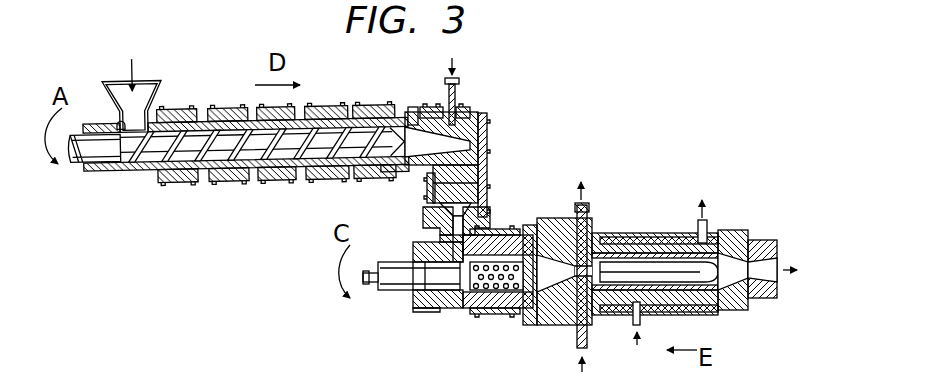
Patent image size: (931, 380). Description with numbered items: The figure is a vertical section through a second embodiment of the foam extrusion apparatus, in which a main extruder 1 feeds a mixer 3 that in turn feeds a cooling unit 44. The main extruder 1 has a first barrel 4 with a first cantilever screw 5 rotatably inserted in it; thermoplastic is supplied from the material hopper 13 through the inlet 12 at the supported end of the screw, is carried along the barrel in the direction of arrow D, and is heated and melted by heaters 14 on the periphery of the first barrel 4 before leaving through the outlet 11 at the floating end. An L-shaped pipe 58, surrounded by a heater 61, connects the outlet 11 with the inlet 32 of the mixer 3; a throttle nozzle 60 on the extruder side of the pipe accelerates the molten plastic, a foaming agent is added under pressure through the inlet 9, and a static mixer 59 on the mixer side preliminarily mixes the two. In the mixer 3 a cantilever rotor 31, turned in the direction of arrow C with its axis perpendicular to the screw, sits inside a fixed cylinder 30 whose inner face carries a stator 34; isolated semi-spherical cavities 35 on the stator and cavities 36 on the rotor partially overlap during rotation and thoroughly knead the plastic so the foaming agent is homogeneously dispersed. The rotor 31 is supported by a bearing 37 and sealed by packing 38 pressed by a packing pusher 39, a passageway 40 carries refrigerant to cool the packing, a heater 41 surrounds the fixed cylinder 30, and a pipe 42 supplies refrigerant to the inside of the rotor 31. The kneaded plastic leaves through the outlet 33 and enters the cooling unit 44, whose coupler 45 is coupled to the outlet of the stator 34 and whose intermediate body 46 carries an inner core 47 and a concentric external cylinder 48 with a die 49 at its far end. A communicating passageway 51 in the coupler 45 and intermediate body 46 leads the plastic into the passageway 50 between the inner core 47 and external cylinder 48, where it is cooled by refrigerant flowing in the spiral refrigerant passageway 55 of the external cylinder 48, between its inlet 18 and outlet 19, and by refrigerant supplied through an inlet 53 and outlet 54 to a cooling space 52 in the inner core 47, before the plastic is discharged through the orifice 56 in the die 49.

The main extruder 1 is at (197, 203).
The mixer 3 is at (461, 335).
The first barrel 4 is at (153, 180).
The first cantilever screw 5 is at (228, 160).
The inlet for foaming agent 9 is at (456, 92).
The outlet 11 is at (410, 108).
The inlet for materials 12 is at (117, 126).
The material hopper 13 is at (150, 98).
The heaters 14 is at (222, 108).
The inlet of the refrigerant passageway 18 is at (645, 328).
The outlet of the refrigerant passageway 19 is at (708, 223).
The fixed cylinder 30 is at (478, 313).
The cantilever rotor 31 is at (420, 301).
The inlet 32 is at (425, 237).
The outlet 33 is at (540, 326).
The stator 34 is at (506, 310).
The semi-spherical cavities of the stator 35 is at (500, 230).
The semi-spherical cavities of the rotor 36 is at (474, 278).
The bearing 37 is at (470, 293).
The packing 38 is at (428, 302).
The packing pusher 39 is at (422, 291).
The passageway of a refrigerant 40 is at (445, 313).
The heater 41 is at (528, 326).
The pipe 42 is at (368, 288).
The cooling unit 44 is at (640, 232).
The coupler 45 is at (553, 222).
The intermediate body 46 is at (566, 321).
The inner core 47 is at (642, 315).
The external cylinder 48 is at (661, 259).
The die 49 is at (763, 299).
The passageway for the thermo plastic material 50 is at (723, 311).
The communicating passageway 51 is at (563, 368).
The cooling space 52 is at (622, 318).
The inlet for refrigerant 53 is at (589, 326).
The outlet for refrigerant 54 is at (586, 226).
The spiral refrigerant passageway 55 is at (620, 236).
The orifice 56 is at (780, 284).
The L-shaped pipe 58 is at (473, 118).
The static mixer 59 is at (478, 196).
The throttle nozzle 60 is at (483, 143).
The heater 61 is at (432, 107).